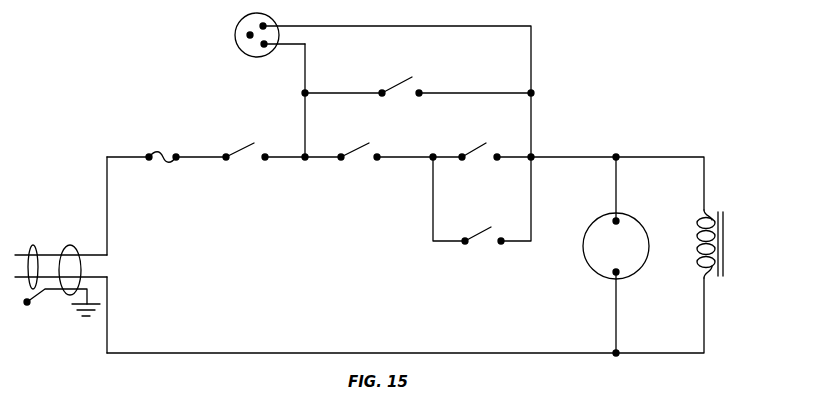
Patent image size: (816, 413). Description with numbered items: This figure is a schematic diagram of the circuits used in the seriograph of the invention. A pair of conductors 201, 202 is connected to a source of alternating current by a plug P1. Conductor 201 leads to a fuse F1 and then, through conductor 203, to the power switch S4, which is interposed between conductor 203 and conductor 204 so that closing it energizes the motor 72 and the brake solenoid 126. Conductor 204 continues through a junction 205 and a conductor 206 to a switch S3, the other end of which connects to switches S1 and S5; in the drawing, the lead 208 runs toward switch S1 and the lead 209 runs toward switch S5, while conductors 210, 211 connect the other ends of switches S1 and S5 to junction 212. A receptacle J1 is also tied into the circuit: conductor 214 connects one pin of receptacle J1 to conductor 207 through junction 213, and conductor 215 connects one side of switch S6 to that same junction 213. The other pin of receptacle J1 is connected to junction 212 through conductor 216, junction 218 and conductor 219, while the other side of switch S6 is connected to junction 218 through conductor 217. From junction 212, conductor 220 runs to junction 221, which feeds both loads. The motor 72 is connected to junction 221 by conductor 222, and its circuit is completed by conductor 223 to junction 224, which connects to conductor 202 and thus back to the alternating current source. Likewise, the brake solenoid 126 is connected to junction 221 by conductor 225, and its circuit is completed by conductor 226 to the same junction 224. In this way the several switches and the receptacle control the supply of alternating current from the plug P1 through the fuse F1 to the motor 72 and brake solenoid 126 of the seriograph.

The conductor 201 is at (108, 204).
The conductor 202 is at (108, 304).
The conductor 203 is at (207, 156).
The conductor 204 is at (280, 160).
The junction 205 is at (305, 161).
The conductor 206 is at (325, 142).
The conductor 207 is at (304, 128).
The wire 208 is at (449, 156).
The wire 209 is at (432, 205).
The conductor 210 is at (515, 156).
The conductor 211 is at (533, 203).
The junction 212 is at (533, 160).
The junction 213 is at (303, 93).
The conductor 214 is at (307, 57).
The conductor 215 is at (343, 80).
The conductor 216 is at (423, 27).
The conductor 217 is at (494, 92).
The junction 218 is at (534, 93).
The conductor 219 is at (533, 128).
The conductor 220 is at (583, 157).
The junction 221 is at (625, 156).
The conductor 222 is at (618, 183).
The conductor 223 is at (618, 302).
The junction 224 is at (618, 351).
The conductor 225 is at (680, 157).
The conductor 226 is at (706, 333).
The motor 72 is at (627, 255).
The brake solenoid 126 is at (711, 276).
The fuse F1 is at (166, 152).
The plug P1 is at (56, 286).
The receptacle J1 is at (236, 40).
The switch S1 is at (485, 159).
The switch S3 is at (359, 159).
The power switch S4 is at (245, 158).
The switch S5 is at (482, 244).
The switch S6 is at (408, 89).